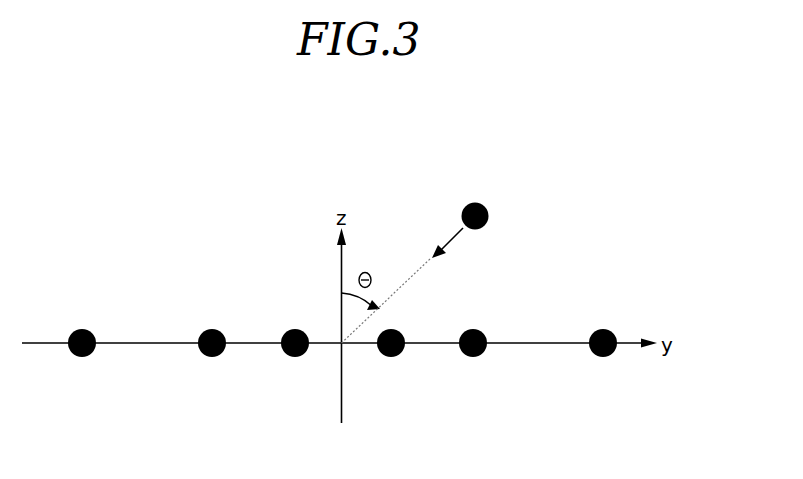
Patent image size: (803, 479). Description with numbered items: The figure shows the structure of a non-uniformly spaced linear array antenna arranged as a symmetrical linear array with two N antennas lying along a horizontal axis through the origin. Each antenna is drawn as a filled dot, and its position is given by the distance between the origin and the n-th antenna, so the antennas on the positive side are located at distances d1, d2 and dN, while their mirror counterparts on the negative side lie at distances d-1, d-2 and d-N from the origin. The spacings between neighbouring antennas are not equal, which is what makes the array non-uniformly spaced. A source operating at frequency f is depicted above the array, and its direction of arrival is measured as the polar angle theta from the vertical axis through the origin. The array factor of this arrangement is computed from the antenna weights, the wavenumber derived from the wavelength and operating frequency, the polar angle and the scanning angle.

The distance to the -N-th antenna d-N is at (80, 358).
The distance to the -2nd antenna d-2 is at (210, 358).
The distance to the -1st antenna d-1 is at (293, 358).
The distance to the 1st antenna d1 is at (391, 358).
The distance to the 2nd antenna d2 is at (473, 358).
The distance to the N-th antenna dN is at (603, 358).